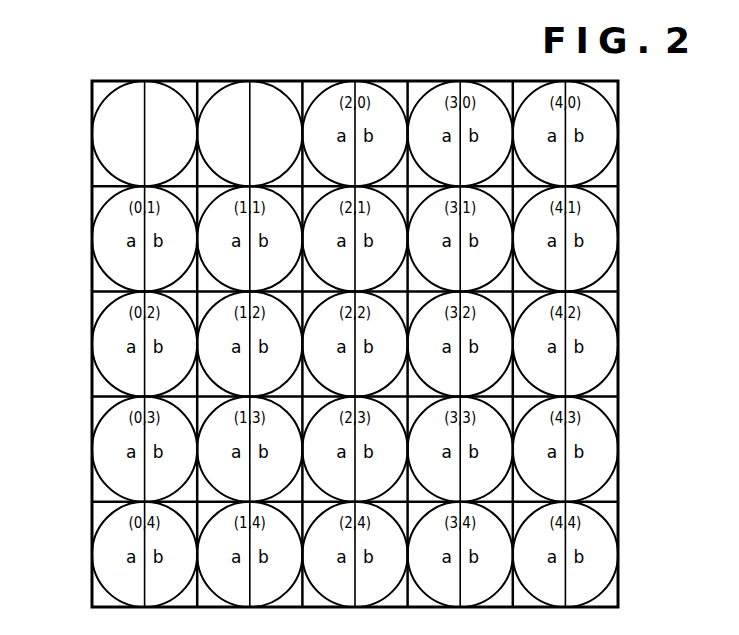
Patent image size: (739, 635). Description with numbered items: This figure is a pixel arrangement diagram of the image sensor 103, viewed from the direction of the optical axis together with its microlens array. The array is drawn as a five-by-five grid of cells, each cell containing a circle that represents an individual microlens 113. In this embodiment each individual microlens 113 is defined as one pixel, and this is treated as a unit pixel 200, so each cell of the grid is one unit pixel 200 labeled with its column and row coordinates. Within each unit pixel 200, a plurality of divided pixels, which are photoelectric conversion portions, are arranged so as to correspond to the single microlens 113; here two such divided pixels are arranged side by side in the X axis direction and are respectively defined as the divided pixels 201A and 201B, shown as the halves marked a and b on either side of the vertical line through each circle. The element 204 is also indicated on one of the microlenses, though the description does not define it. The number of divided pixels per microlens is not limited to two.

The image sensor 103 is at (620, 92).
The unit pixel 200 is at (95, 193).
The microlens 113 is at (119, 116).
The microlens 204 is at (287, 95).
The divided pixel (photoelectric conversion portion) 201A is at (124, 137).
The divided pixel (photoelectric conversion portion) 201B is at (167, 137).